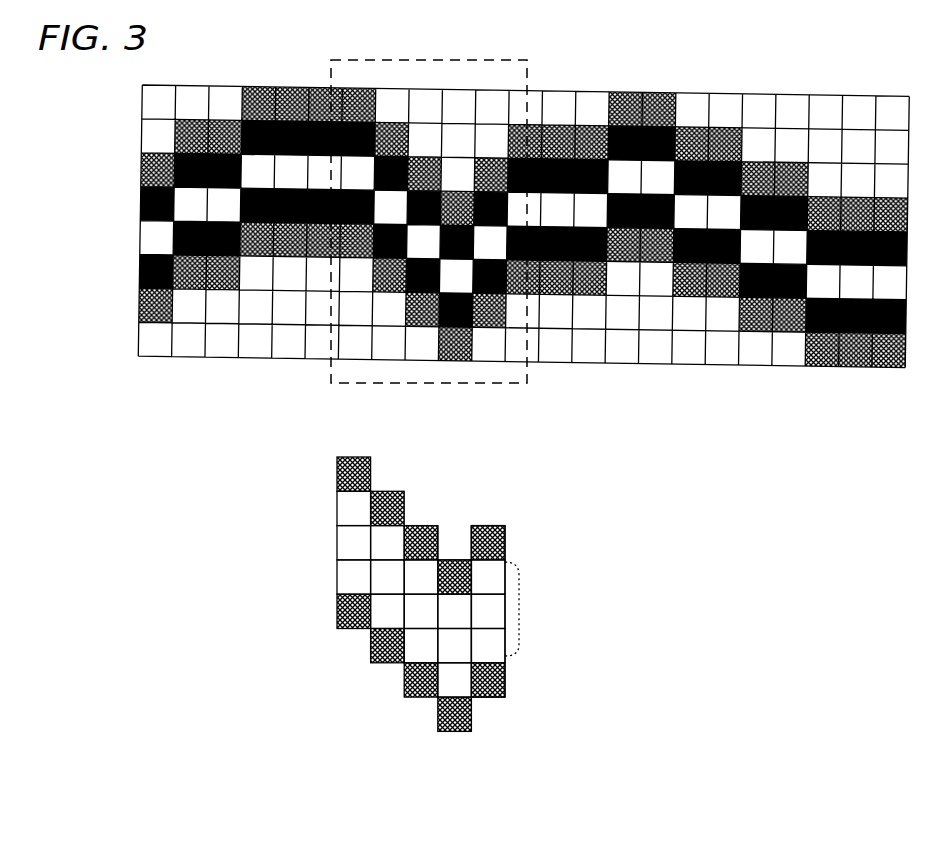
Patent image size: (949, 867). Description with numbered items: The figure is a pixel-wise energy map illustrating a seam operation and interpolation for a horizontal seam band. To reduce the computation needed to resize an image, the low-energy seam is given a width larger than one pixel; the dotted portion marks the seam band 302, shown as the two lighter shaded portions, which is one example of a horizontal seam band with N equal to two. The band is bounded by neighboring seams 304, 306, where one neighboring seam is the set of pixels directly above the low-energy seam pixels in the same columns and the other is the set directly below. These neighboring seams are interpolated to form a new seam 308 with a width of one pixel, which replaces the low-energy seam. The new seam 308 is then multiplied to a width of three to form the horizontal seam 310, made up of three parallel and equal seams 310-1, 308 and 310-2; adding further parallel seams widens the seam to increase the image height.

The seam band 302 is at (450, 59).
The neighboring seam 304 is at (480, 525).
The neighboring seam 306 is at (342, 603).
The new seam 308 is at (382, 578).
The horizontal seam 310 is at (523, 609).
The parallel seam 310-1 is at (383, 537).
The parallel seam 310-2 is at (338, 576).